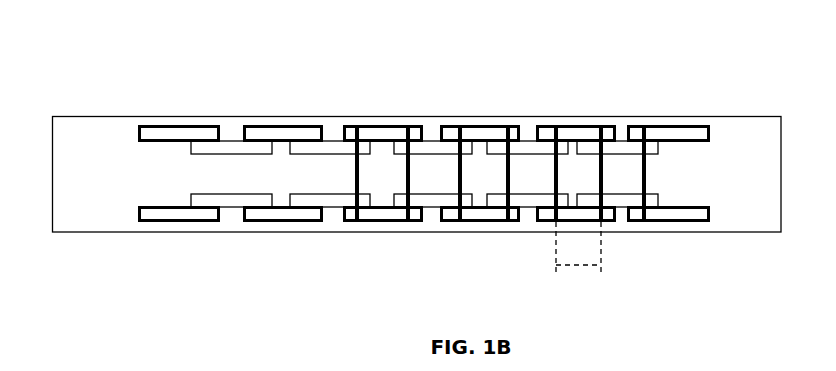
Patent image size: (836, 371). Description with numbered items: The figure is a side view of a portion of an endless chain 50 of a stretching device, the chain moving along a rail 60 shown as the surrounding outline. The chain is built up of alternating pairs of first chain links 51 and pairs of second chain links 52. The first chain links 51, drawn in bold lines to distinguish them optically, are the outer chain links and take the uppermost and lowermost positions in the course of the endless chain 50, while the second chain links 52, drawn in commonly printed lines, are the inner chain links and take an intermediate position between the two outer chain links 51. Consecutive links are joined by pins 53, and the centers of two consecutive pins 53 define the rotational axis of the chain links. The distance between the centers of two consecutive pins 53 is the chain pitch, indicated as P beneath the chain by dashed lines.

The endless chain 50 is at (728, 169).
The first chain links 51 is at (255, 135).
The second chain links 52 is at (322, 152).
The pins 53 is at (506, 135).
The rail 60 is at (91, 173).
The chain pitch P is at (578, 264).